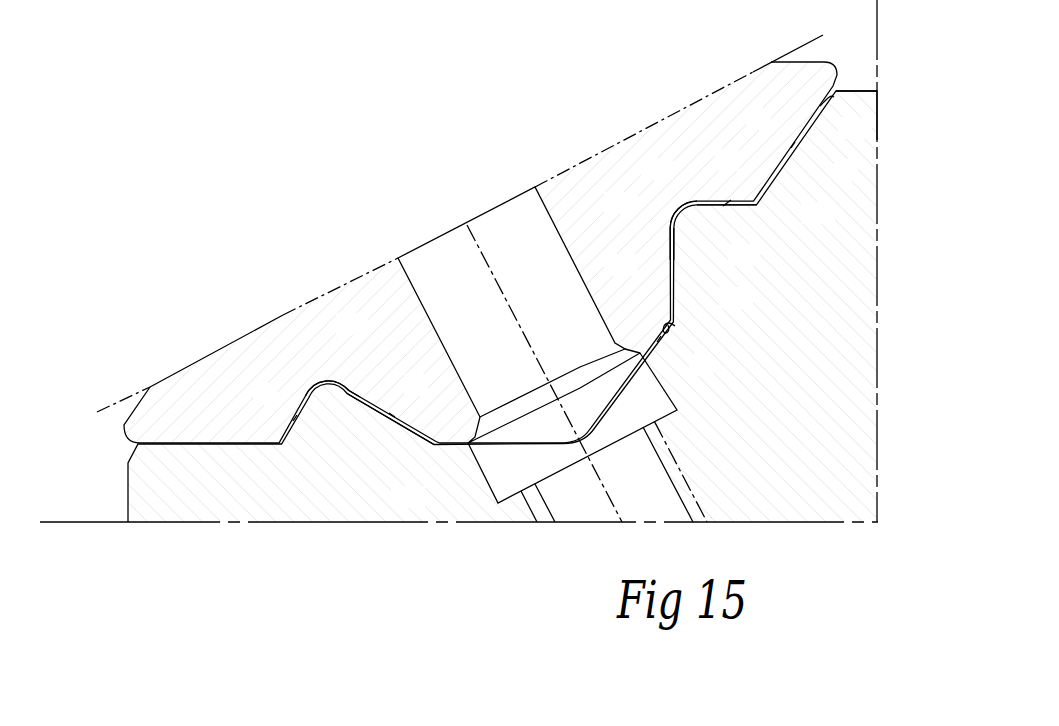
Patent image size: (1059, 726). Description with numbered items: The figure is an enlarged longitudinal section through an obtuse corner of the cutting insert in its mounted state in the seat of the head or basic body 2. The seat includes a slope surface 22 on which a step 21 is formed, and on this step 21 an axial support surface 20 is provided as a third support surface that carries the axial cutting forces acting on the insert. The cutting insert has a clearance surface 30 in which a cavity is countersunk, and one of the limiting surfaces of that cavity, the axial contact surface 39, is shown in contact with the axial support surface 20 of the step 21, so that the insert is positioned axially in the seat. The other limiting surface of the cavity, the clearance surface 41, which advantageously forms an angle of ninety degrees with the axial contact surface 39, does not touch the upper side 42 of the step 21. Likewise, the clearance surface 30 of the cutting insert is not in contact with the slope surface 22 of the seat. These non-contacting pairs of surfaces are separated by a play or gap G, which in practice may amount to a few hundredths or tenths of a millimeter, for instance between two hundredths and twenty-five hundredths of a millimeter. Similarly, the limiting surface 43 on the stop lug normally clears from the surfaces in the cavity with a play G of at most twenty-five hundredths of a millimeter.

The basic body 2 is at (784, 168).
The axial support surface 20 is at (680, 284).
The step 21 is at (688, 225).
The slope surface 22 is at (819, 121).
The clearance surface 30 is at (820, 106).
The axial contact surface 39 is at (671, 247).
The clearance surface 41 is at (758, 205).
The upper side 42 is at (710, 203).
The limiting surface 43 is at (420, 424).
The gap G is at (815, 158).